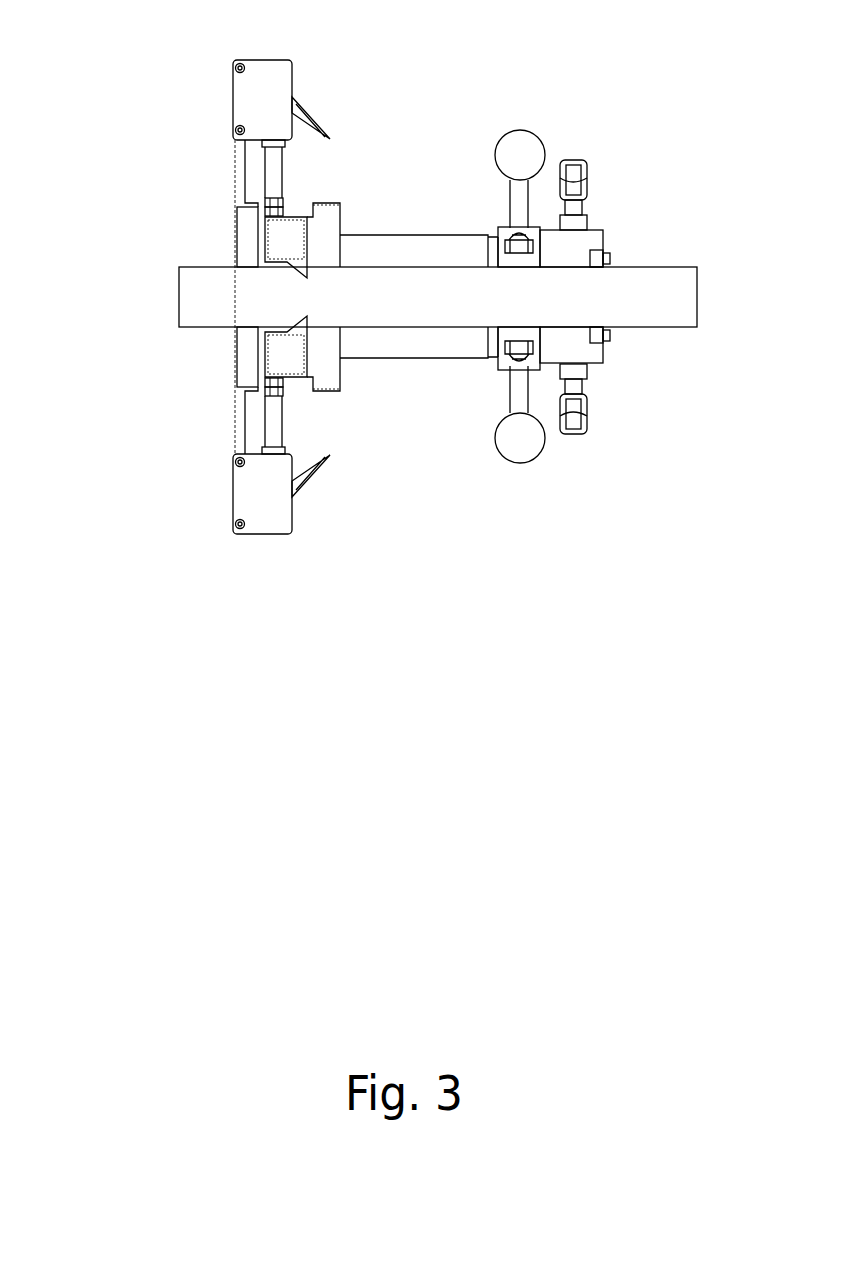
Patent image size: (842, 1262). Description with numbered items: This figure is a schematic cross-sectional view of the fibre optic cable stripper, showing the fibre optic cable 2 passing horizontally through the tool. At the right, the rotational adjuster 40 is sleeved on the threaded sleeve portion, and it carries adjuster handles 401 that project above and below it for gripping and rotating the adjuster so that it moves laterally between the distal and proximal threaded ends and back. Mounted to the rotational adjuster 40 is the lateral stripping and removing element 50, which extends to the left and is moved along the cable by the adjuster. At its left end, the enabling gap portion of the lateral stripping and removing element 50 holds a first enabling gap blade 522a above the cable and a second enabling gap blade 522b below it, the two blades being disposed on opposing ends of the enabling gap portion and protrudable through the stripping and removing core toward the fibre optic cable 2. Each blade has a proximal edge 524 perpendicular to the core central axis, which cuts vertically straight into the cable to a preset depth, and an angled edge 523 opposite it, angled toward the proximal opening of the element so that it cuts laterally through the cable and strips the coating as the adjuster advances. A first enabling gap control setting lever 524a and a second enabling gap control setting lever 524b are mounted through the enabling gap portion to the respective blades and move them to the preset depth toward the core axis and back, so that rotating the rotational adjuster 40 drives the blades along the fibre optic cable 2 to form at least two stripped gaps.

The fibre optic cable 2 is at (680, 290).
The rotational adjuster 40 is at (497, 227).
The adjuster handle 401 is at (523, 190).
The lateral stripping and removing element 50 is at (385, 348).
The first enabling gap blade 522a is at (283, 242).
The second enabling gap blade 522b is at (287, 355).
The angled edge 523 is at (250, 268).
The proximal edge 524 is at (308, 318).
The first enabling gap control setting lever 524a is at (318, 110).
The second enabling gap control setting lever 524b is at (318, 475).